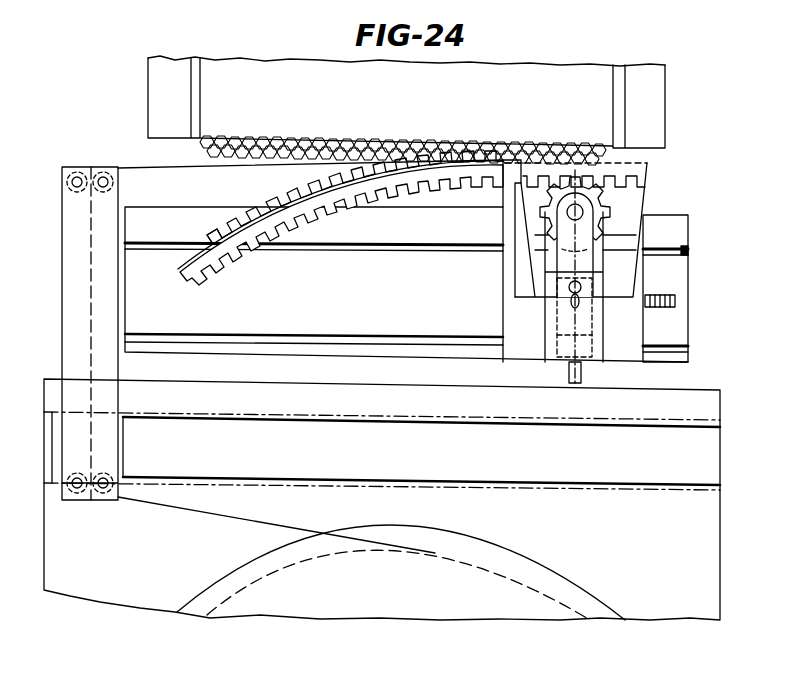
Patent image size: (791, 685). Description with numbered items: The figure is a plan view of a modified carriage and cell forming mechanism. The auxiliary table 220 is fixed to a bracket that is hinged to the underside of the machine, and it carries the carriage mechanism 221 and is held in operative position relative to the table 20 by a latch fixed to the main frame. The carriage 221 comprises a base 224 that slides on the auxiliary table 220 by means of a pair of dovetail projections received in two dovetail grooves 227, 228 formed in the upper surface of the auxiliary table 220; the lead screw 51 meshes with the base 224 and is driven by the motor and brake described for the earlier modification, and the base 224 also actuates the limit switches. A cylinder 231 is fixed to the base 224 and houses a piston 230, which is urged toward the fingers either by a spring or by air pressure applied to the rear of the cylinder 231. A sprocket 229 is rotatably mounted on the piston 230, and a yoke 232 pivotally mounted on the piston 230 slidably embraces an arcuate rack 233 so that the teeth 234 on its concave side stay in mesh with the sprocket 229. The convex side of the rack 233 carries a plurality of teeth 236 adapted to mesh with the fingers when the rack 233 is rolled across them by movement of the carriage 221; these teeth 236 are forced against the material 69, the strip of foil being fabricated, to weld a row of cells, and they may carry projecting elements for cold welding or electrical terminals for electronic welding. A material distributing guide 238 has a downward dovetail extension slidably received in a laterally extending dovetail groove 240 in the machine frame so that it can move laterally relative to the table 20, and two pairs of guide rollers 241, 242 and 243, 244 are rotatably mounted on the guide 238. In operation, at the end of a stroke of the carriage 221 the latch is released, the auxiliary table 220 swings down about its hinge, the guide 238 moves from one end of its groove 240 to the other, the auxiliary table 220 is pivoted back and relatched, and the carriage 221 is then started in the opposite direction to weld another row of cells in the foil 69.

The table 20 is at (457, 107).
The material distributing guide 238 is at (62, 308).
The guide roller 243 is at (85, 159).
The guide roller 244 is at (104, 172).
The guide roller 241 is at (72, 498).
The guide roller 242 is at (100, 498).
The arcuate rack 233 is at (413, 192).
The teeth 234 is at (448, 190).
The teeth 236 is at (229, 242).
The yoke 232 is at (517, 253).
The carriage mechanism 221 is at (658, 238).
The sprocket 229 is at (600, 212).
The piston 230 is at (592, 258).
The cylinder 231 is at (592, 343).
The base 224 is at (643, 352).
The auxiliary table 220 is at (690, 272).
The dovetail groove 228 is at (690, 252).
The dovetail groove 227 is at (690, 350).
The lead screw 51 is at (676, 302).
The dovetail groove 240 is at (672, 465).
The strip of foil 69 is at (177, 505).